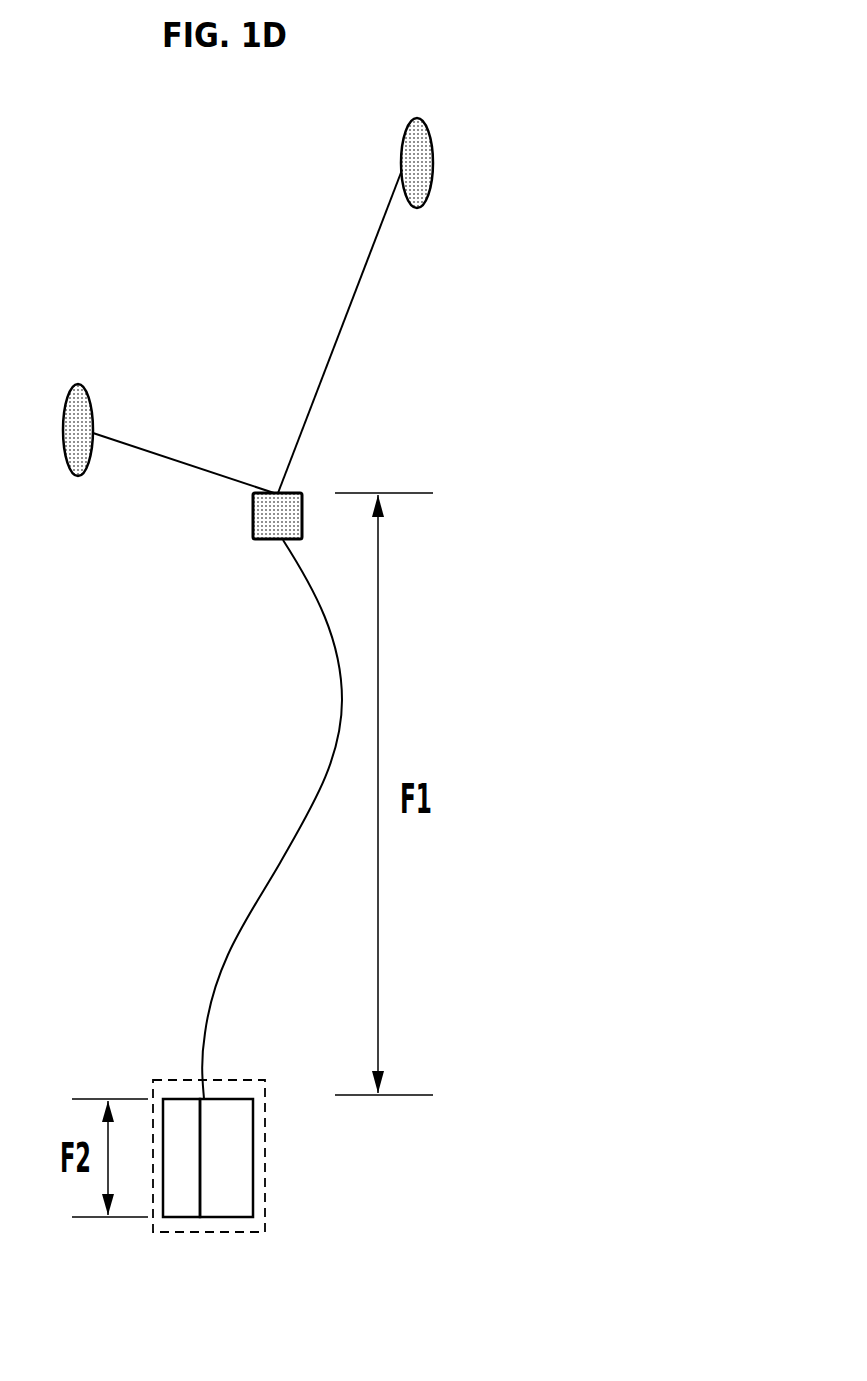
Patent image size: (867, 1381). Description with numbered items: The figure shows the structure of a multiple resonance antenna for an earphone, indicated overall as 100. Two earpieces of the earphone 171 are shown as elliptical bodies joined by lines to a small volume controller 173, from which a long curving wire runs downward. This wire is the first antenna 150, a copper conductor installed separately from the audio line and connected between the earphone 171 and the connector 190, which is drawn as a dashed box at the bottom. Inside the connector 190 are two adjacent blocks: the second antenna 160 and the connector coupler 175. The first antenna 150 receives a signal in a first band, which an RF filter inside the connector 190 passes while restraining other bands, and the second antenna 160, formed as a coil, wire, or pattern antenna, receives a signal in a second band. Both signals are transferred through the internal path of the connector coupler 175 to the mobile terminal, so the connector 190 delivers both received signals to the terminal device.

The electronic device 100 is at (128, 173).
The earphone 171 is at (402, 167).
The volume controller 173 is at (304, 492).
The first antenna 150 is at (307, 813).
The connector 190 is at (221, 1080).
The second antenna 160 is at (185, 1202).
The connector coupler 175 is at (235, 1188).